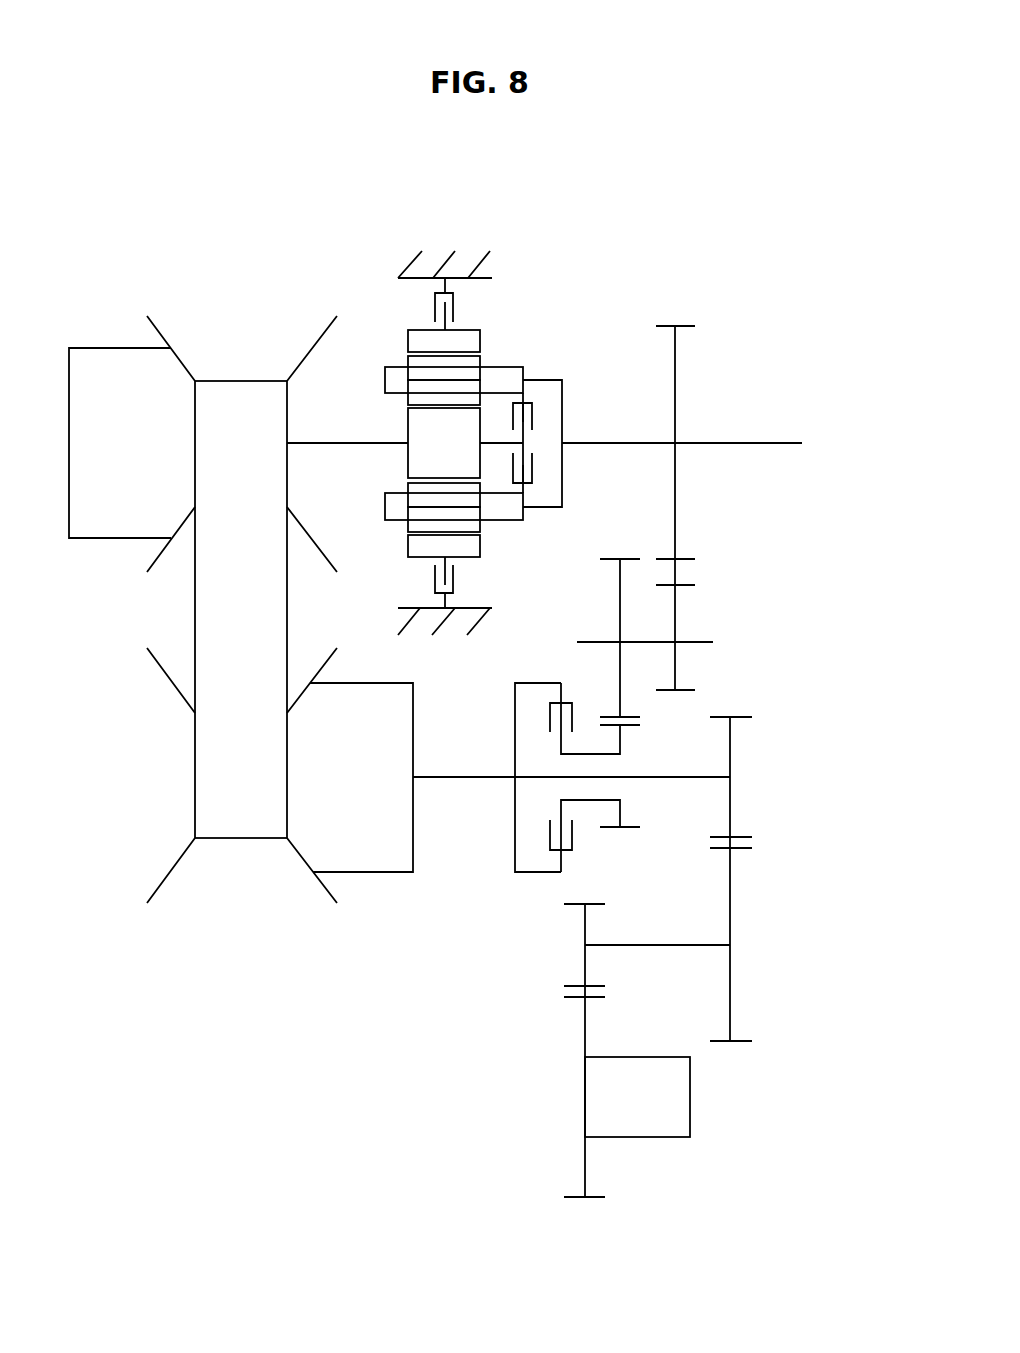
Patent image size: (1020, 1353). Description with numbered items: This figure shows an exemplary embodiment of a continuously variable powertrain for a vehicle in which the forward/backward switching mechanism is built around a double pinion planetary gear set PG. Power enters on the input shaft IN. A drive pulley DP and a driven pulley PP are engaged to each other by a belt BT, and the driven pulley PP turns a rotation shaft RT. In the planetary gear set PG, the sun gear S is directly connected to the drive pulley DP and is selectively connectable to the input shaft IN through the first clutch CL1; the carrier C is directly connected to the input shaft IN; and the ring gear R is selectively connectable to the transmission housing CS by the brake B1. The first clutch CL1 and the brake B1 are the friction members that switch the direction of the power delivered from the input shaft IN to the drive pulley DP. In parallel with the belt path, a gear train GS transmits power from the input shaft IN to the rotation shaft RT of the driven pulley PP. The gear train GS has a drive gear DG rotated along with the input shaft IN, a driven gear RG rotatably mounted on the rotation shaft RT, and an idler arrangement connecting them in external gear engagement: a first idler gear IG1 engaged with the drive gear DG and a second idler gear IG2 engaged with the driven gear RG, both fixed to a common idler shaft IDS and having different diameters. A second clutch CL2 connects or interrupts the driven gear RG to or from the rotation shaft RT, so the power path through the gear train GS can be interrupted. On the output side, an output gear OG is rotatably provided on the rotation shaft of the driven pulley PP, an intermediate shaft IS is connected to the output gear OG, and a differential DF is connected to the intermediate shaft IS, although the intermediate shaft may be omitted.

The drive pulley DP is at (160, 332).
The belt BT is at (195, 617).
The driven pulley PP is at (160, 890).
The rotation shaft RT is at (477, 777).
The input shaft IN is at (765, 441).
The planetary gear set PG is at (392, 411).
The ring gear R is at (408, 343).
The carrier C is at (385, 378).
The sun gear S is at (408, 430).
The brake B1 is at (435, 308).
The transmission housing CS is at (447, 253).
The first clutch CL1 is at (530, 401).
The second clutch CL2 is at (544, 840).
The drive gear DG is at (688, 559).
The first idler gear IG1 is at (688, 585).
The second idler gear IG2 is at (640, 714).
The idler shaft IDS is at (583, 641).
The driven gear RG is at (640, 727).
The gear train GS is at (800, 548).
The output gear OG is at (742, 832).
The intermediate shaft IS is at (707, 944).
The differential DF is at (690, 1095).